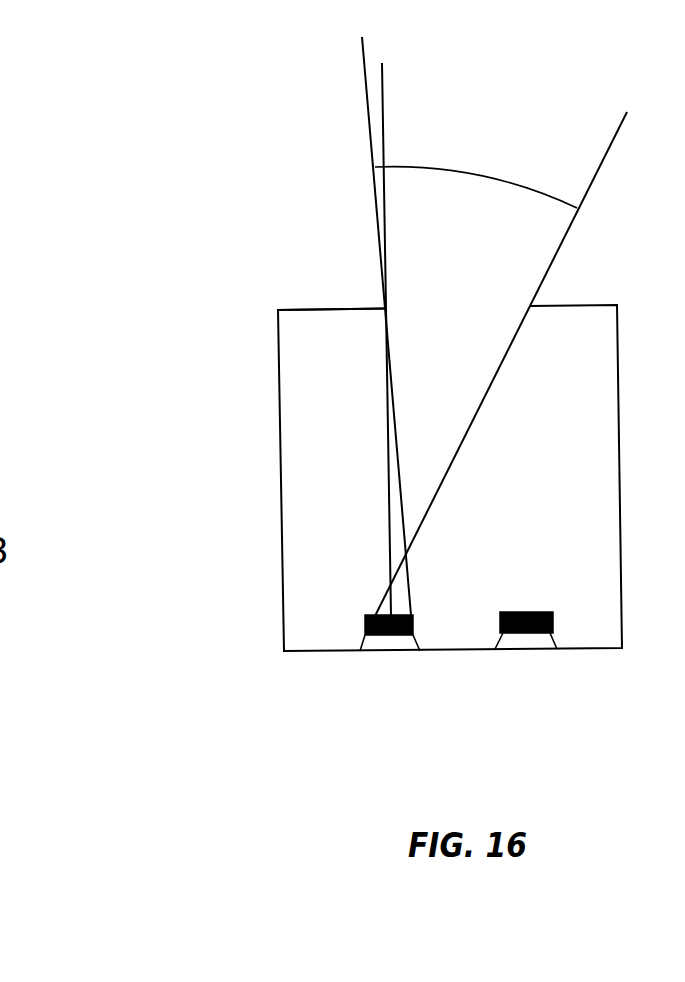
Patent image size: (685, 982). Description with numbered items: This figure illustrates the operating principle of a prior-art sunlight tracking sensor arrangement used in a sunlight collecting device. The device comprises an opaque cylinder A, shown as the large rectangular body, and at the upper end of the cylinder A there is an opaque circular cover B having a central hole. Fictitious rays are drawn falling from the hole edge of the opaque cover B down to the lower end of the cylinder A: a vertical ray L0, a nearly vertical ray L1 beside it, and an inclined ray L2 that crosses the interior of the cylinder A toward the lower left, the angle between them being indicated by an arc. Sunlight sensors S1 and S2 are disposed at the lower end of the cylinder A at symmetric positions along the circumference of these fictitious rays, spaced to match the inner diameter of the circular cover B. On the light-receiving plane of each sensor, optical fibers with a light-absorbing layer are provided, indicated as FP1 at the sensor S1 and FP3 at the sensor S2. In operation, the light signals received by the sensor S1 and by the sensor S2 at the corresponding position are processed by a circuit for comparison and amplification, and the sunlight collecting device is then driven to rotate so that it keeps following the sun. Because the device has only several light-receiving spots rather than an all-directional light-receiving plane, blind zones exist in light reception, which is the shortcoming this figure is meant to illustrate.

The opaque cylinder A is at (277, 392).
The opaque circular cover B is at (318, 310).
The fictitious ray L0 is at (383, 72).
The fictitious ray L1 is at (362, 100).
The fictitious ray L2 is at (609, 147).
The sunlight sensor S1 is at (392, 642).
The sunlight sensor S2 is at (532, 640).
The optical fiber with light-absorbing layer FP1 is at (372, 634).
The optical fiber with light-absorbing layer FP3 is at (528, 633).